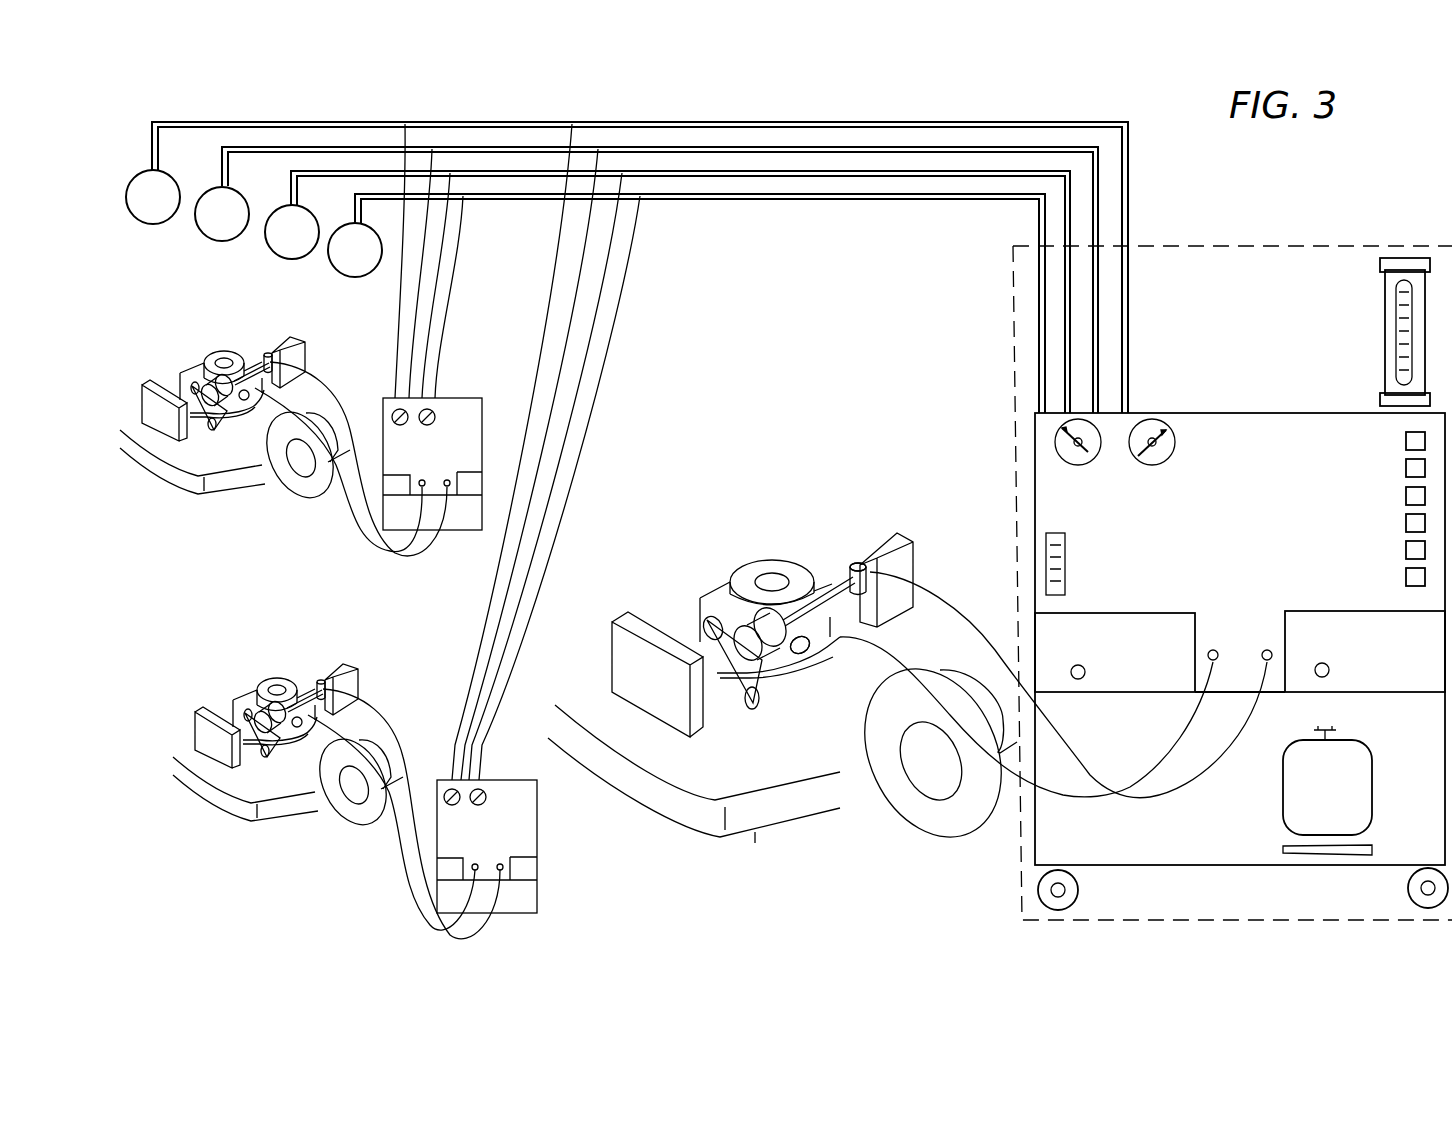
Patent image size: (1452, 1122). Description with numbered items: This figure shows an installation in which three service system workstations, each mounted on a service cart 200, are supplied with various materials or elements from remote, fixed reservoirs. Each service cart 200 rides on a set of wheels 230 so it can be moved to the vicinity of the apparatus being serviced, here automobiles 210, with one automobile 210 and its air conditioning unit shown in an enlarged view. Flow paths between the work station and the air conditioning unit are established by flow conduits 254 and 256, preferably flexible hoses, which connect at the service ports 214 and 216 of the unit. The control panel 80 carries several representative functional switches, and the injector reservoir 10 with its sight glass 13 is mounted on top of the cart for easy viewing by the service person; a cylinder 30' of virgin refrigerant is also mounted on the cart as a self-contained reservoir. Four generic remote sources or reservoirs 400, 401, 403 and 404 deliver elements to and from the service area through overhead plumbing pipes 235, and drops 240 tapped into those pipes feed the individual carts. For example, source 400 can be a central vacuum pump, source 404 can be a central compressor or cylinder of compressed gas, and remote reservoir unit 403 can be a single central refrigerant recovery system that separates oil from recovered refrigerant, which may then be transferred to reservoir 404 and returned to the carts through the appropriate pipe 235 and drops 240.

The injector reservoir 10 is at (1385, 343).
The sight glass 13 is at (1395, 300).
The control panel 80 is at (1247, 417).
The cylinder of virgin refrigerant 30' is at (1356, 790).
The service cart 200 is at (1312, 250).
The automobile 210 is at (168, 482).
The high side service port 214 is at (868, 563).
The low side service port 216 is at (806, 640).
The wheels 230 is at (1038, 890).
The overhead plumbing pipes 235 is at (860, 122).
The drops 240 is at (437, 310).
The flow conduit 254 is at (1177, 757).
The flow conduit 256 is at (1170, 790).
The remote source 400 is at (153, 197).
The remote source 401 is at (222, 214).
The remote reservoir unit 403 is at (292, 232).
The remote reservoir 404 is at (355, 250).